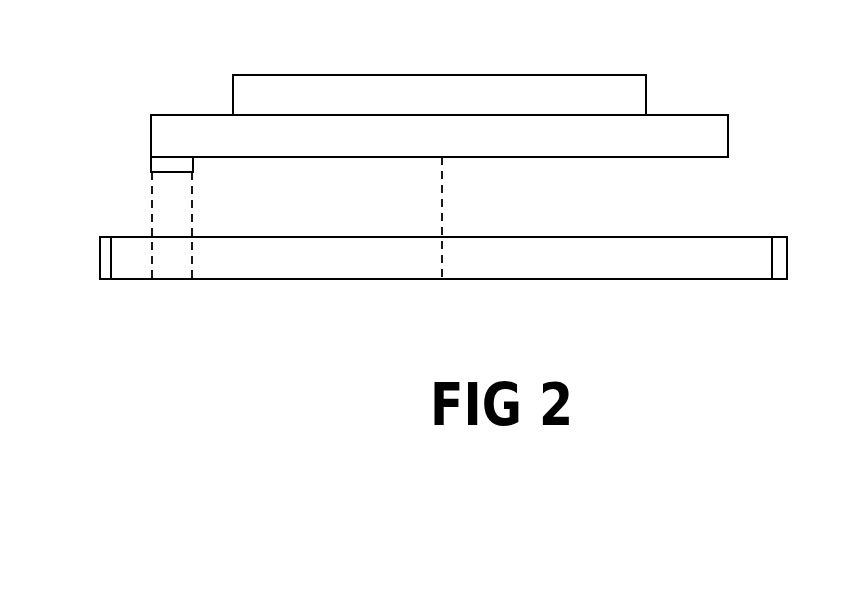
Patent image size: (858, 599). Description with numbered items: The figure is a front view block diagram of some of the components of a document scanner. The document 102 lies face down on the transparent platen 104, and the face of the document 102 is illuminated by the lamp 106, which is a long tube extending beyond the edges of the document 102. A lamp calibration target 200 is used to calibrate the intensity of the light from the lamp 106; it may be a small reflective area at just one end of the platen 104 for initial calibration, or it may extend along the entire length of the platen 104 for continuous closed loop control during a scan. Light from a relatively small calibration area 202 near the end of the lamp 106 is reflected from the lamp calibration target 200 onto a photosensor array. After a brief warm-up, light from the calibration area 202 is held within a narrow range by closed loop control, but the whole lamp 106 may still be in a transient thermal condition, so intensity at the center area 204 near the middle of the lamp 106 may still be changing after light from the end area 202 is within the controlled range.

The document 102 is at (360, 75).
The transparent platen 104 is at (690, 116).
The lamp 106 is at (729, 280).
The lamp calibration target 200 is at (151, 162).
The calibration area 202 is at (192, 281).
The center area 204 is at (442, 278).